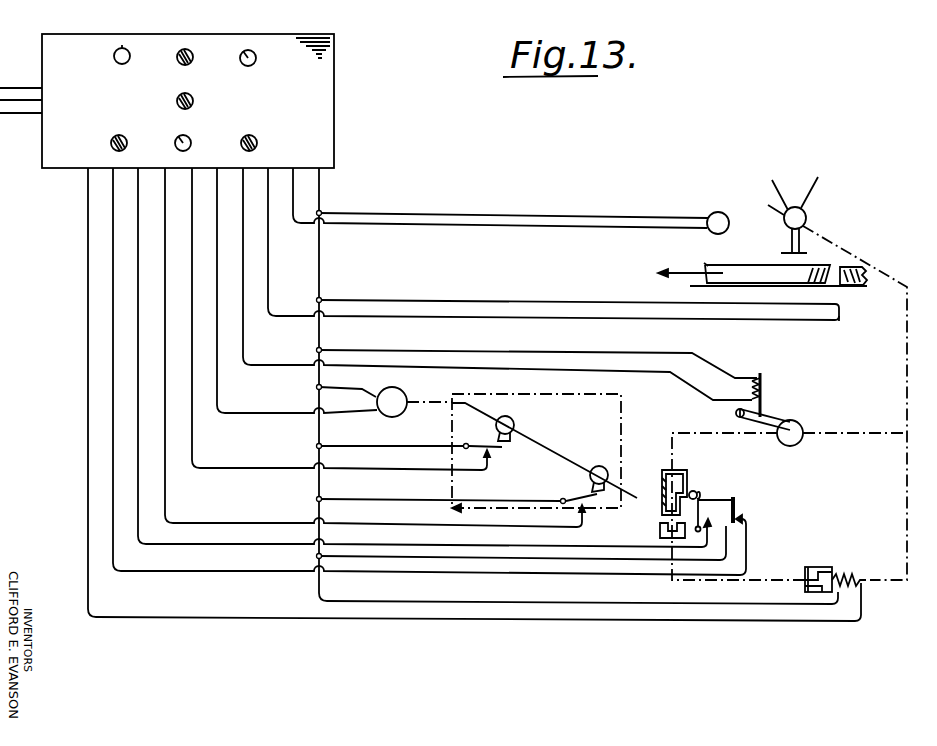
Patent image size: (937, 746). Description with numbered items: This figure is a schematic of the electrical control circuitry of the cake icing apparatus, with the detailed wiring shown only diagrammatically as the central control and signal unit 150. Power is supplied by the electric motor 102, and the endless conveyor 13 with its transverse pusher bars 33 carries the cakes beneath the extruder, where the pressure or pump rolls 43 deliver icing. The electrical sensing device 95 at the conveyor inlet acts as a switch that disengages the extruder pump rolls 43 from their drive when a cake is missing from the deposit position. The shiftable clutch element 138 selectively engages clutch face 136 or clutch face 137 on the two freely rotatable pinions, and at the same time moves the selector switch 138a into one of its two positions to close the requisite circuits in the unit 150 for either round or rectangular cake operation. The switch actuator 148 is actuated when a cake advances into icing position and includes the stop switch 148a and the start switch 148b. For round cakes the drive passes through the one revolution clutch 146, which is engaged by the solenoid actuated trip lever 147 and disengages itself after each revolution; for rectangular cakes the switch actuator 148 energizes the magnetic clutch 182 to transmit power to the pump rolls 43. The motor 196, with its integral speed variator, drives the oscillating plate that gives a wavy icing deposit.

The central control and signal unit 150 is at (340, 68).
The motor 196 is at (724, 212).
The pump rolls 43 is at (806, 213).
The pusher bars 33 is at (836, 280).
The endless conveyor 13 is at (690, 286).
The electrical sensing device 95 is at (840, 302).
The trip lever 147 is at (764, 378).
The one revolution clutch 146 is at (796, 425).
The switch actuator 148 is at (614, 396).
The start switch 148b is at (517, 441).
The stop switch 148a is at (597, 497).
The electric motor 102 is at (386, 418).
The clutch face 136 is at (683, 470).
The clutch element 138 is at (660, 492).
The selector switch 138a is at (736, 511).
The clutch face 137 is at (660, 530).
The magnetic clutch 182 is at (832, 568).